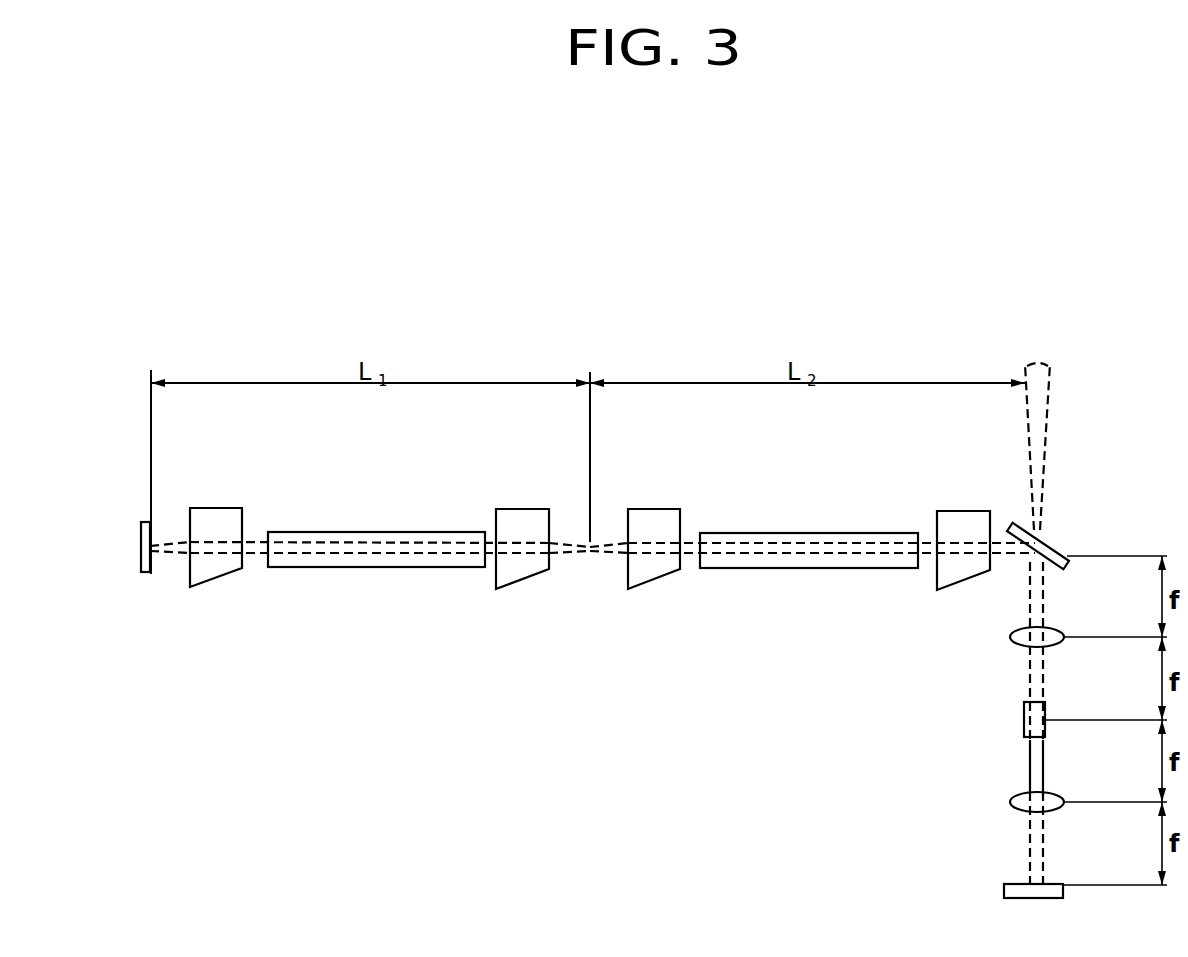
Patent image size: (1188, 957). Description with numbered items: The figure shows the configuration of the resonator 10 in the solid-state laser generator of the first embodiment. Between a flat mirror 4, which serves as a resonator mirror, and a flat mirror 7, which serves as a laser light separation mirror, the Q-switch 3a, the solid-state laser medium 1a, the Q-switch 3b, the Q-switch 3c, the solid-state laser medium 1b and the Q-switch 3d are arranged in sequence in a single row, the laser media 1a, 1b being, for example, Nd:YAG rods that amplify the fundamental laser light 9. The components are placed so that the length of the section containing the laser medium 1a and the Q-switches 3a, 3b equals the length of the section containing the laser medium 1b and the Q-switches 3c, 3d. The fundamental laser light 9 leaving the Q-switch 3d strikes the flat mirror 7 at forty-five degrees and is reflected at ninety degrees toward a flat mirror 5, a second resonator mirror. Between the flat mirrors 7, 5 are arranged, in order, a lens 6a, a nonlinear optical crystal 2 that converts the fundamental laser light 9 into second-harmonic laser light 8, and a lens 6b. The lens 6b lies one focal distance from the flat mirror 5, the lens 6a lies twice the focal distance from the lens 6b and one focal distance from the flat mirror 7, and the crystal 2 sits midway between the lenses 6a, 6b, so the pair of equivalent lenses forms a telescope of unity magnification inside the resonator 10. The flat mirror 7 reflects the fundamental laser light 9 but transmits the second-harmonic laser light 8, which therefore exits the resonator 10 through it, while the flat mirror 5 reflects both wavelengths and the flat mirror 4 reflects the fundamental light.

The solid-state laser medium 1a is at (340, 569).
The solid-state laser medium 1b is at (822, 569).
The nonlinear optical crystal 2 is at (1024, 722).
The Q-switch 3a is at (211, 506).
The Q-switch 3b is at (516, 508).
The Q-switch 3c is at (648, 508).
The Q-switch 3d is at (957, 511).
The flat mirror 4 is at (143, 574).
The flat mirror 5 is at (1004, 890).
The lens 6a is at (1010, 637).
The lens 6b is at (1010, 802).
The flat mirror 7 is at (1040, 544).
The second-harmonic laser light 8 is at (1045, 425).
The fundamental laser light 9 is at (590, 545).
The resonator 10 is at (1095, 333).